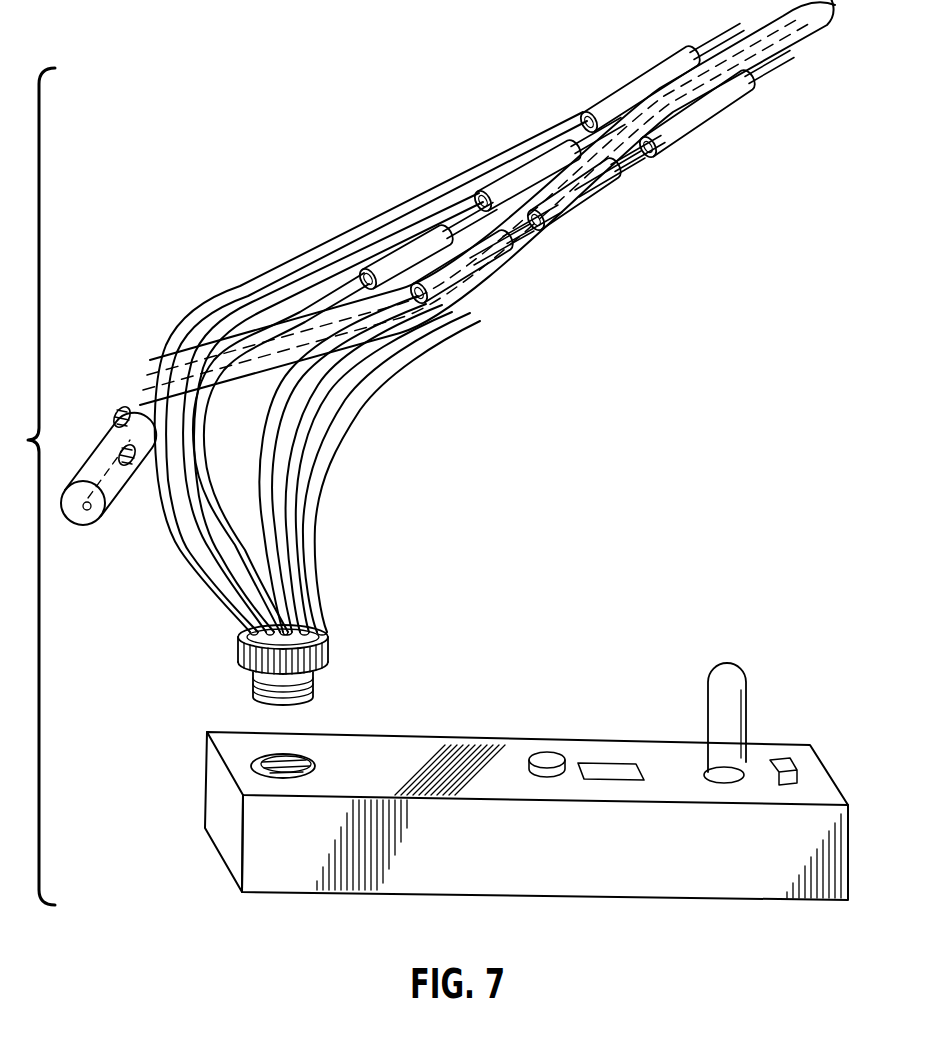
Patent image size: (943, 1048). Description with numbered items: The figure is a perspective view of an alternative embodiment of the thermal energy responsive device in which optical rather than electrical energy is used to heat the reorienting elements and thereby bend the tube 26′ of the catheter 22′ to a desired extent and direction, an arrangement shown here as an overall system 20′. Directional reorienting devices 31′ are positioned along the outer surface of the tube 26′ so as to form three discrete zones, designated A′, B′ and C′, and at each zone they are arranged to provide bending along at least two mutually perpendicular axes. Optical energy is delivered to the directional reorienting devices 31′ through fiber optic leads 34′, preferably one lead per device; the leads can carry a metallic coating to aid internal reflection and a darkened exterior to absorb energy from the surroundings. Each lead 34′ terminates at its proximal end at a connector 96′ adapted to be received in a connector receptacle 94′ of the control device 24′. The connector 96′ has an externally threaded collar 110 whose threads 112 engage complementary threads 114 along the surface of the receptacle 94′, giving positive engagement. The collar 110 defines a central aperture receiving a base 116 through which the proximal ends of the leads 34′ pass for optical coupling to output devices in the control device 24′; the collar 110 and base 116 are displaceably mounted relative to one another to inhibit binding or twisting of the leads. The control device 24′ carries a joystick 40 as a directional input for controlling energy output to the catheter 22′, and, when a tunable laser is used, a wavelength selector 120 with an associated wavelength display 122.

The tube 26′ is at (737, 38).
The catheter 22′ is at (575, 171).
The directional reorienting devices 31′ is at (505, 185).
The zone A′ is at (723, 118).
The zone B′ is at (622, 188).
The zone C′ is at (457, 299).
The fiber optic test system 20′ is at (454, 450).
The fiber optic leads 34′ is at (336, 440).
The base 116 is at (298, 616).
The connector 96′ is at (308, 659).
The externally threaded collar 110 is at (330, 655).
The threads 112 is at (252, 693).
The complementary threads 114 is at (300, 765).
The connector receptacle 94′ is at (257, 760).
The control device 24′ is at (489, 760).
The wavelength selector means 120 is at (549, 754).
The wavelength display means 122 is at (618, 768).
The joystick 40 is at (725, 668).